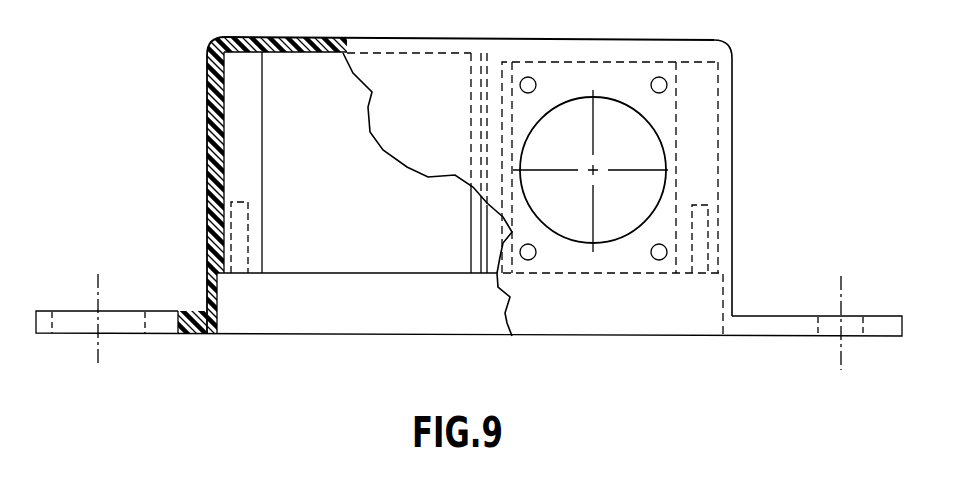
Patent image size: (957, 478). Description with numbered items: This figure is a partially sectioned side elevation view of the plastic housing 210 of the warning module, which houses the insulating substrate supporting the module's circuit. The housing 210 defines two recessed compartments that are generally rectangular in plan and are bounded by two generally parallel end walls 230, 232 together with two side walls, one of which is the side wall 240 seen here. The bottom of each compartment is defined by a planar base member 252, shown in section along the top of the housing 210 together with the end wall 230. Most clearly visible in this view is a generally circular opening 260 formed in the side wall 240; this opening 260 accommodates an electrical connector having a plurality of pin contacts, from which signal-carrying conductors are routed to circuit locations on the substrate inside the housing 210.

The housing 210 is at (173, 72).
The end wall 230 is at (207, 172).
The base member 252 is at (405, 39).
The end wall 232 is at (723, 155).
The side wall 240 is at (653, 107).
The circular opening 260 is at (643, 217).